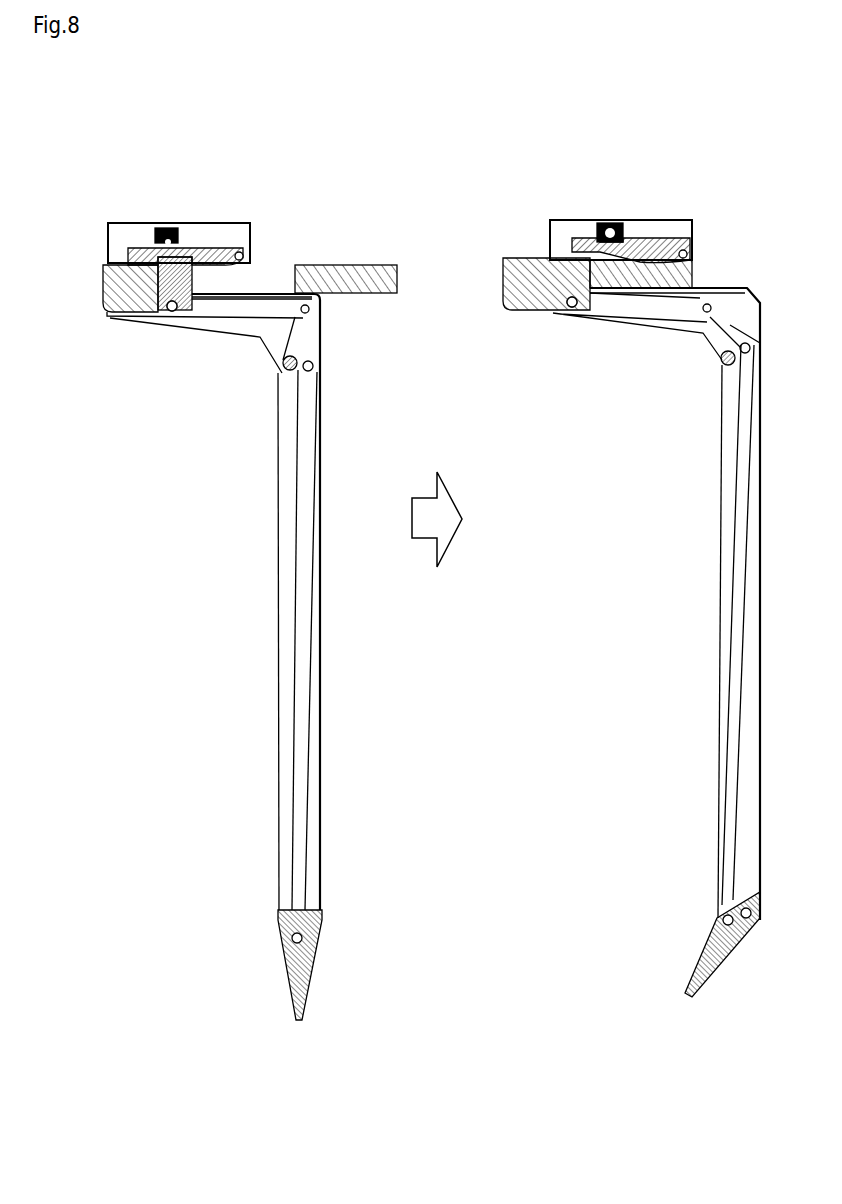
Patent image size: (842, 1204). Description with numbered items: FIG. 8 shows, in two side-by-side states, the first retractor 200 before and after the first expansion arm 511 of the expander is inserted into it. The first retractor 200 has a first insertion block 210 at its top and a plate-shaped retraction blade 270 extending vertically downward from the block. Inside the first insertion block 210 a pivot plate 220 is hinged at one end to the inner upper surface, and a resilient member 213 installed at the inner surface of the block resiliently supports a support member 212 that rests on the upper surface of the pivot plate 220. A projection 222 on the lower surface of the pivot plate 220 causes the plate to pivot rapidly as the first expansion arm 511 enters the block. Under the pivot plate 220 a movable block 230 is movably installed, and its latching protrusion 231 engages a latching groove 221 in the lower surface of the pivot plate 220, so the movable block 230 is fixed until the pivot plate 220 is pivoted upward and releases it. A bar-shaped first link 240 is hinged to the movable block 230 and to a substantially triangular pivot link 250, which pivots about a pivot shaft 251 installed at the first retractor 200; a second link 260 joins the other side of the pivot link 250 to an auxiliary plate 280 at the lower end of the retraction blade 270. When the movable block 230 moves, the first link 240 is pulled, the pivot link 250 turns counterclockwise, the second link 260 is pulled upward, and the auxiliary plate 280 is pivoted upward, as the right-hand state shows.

The first retractor 200 is at (165, 195).
The first insertion block 210 is at (108, 227).
The support member 212 is at (177, 260).
The resilient member 213 is at (163, 222).
The pivot plate 220 is at (125, 253).
The latching groove 221 is at (630, 247).
The projection 222 is at (222, 247).
The movable block 230 is at (103, 290).
The latching protrusion 231 is at (165, 302).
The first link 240 is at (217, 325).
The pivot link 250 is at (307, 338).
The pivot shaft 251 is at (282, 373).
The second link 260 is at (307, 617).
The retraction blade 270 is at (280, 665).
The auxiliary plate 280 is at (287, 977).
The first expansion arm 511 is at (370, 262).